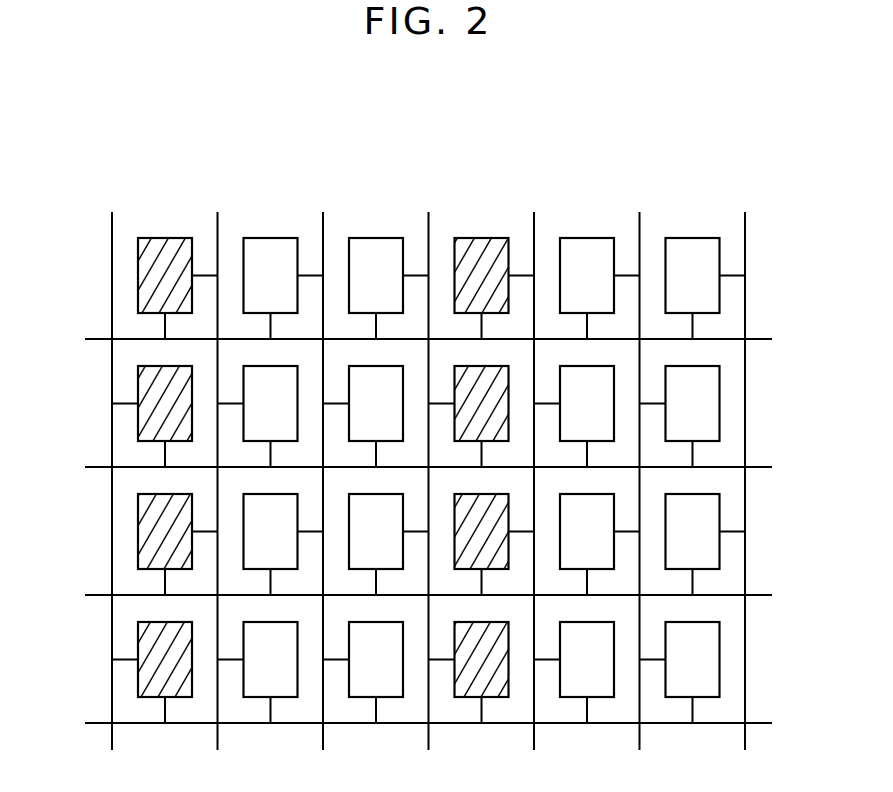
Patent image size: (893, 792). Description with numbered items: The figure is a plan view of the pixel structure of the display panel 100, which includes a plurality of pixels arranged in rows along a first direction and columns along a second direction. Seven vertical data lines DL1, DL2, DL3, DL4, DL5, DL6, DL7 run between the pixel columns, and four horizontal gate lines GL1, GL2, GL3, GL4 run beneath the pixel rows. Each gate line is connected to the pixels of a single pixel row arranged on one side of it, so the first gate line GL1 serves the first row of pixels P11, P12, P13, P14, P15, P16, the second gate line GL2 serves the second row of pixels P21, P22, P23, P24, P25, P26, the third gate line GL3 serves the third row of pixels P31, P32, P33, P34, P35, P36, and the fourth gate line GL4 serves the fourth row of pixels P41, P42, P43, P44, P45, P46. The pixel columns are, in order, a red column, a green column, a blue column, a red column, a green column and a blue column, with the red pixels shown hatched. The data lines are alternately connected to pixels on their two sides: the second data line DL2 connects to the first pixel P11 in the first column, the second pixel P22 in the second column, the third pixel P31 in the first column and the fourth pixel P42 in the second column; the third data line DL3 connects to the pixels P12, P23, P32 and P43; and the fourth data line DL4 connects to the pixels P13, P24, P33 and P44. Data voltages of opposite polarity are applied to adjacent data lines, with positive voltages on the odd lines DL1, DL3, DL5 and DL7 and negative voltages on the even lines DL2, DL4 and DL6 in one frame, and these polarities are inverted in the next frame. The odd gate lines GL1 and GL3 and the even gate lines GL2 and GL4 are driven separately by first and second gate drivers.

The display panel 100 is at (286, 144).
The first data line DL1 is at (111, 465).
The second data line DL2 is at (217, 465).
The third data line DL3 is at (322, 465).
The fourth data line DL4 is at (428, 465).
The fifth data line DL5 is at (533, 465).
The sixth data line DL6 is at (639, 465).
The seventh data line DL7 is at (744, 465).
The first gate line GL1 is at (405, 339).
The second gate line GL2 is at (405, 467).
The third gate line GL3 is at (405, 595).
The fourth gate line GL4 is at (405, 723).
The first pixel P11 is at (178, 288).
The first pixel P12 is at (284, 288).
The first pixel P13 is at (389, 288).
The pixel P14 is at (495, 288).
The pixel P15 is at (600, 288).
The pixel P16 is at (706, 288).
The pixel P21 is at (152, 416).
The second pixel P22 is at (258, 416).
The second pixel P23 is at (363, 416).
The second pixel P24 is at (469, 416).
The pixel P25 is at (574, 416).
The pixel P26 is at (680, 416).
The third pixel P31 is at (178, 544).
The third pixel P32 is at (284, 544).
The third pixel P33 is at (389, 544).
The pixel P34 is at (495, 544).
The pixel P35 is at (600, 544).
The pixel P36 is at (706, 544).
The pixel P41 is at (152, 672).
The fourth pixel P42 is at (258, 672).
The fourth pixel P43 is at (363, 672).
The fourth pixel P44 is at (469, 672).
The pixel P45 is at (574, 672).
The pixel P46 is at (680, 672).